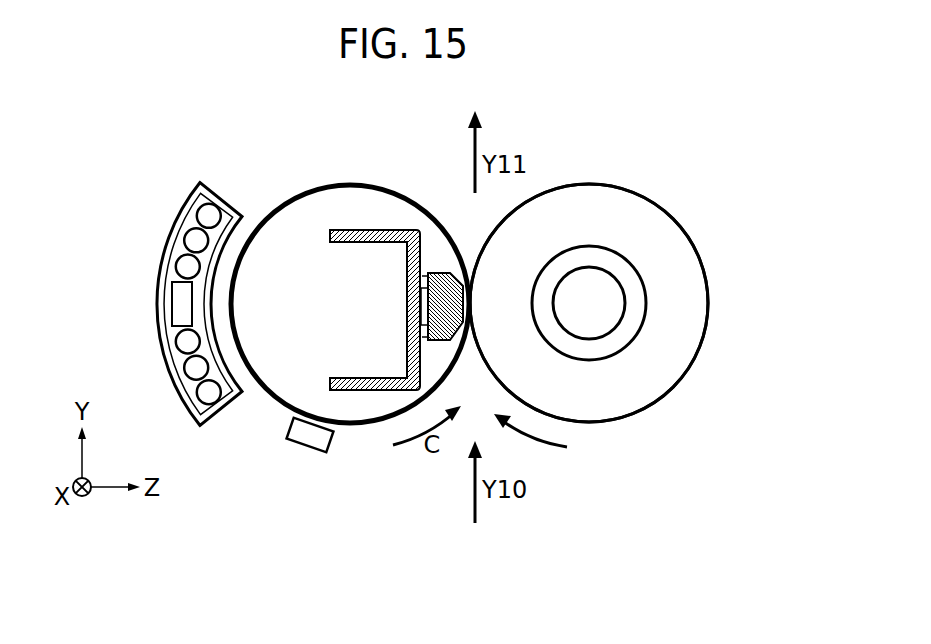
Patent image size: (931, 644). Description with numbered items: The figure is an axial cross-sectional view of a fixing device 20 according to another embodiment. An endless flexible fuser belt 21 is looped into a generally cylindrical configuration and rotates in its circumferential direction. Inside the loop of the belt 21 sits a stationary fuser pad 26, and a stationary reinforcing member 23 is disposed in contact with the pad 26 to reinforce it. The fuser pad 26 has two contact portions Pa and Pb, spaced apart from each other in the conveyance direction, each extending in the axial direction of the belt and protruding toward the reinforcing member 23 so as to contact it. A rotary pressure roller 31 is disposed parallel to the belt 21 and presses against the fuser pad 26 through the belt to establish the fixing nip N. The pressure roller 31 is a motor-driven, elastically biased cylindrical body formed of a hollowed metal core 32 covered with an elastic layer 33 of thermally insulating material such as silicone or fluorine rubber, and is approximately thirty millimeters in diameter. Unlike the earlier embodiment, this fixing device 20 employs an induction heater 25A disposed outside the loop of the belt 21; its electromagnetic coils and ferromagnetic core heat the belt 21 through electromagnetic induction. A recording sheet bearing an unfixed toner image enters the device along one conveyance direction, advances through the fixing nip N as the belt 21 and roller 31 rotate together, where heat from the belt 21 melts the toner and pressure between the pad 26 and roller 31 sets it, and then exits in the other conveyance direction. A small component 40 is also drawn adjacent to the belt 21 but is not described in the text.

The fixing device 20 is at (302, 139).
The fuser belt 21 is at (276, 209).
The reinforcing member 23 is at (365, 220).
The fuser pad 26 is at (448, 272).
The induction heater 25A is at (167, 243).
The sensor unit 40 is at (308, 443).
The pressure roller 31 is at (713, 364).
The hollowed core 32 is at (605, 247).
The elastic layer 33 is at (562, 186).
The contact portion Pa is at (427, 327).
The contact portion Pb is at (426, 278).
The fixing nip N is at (469, 305).